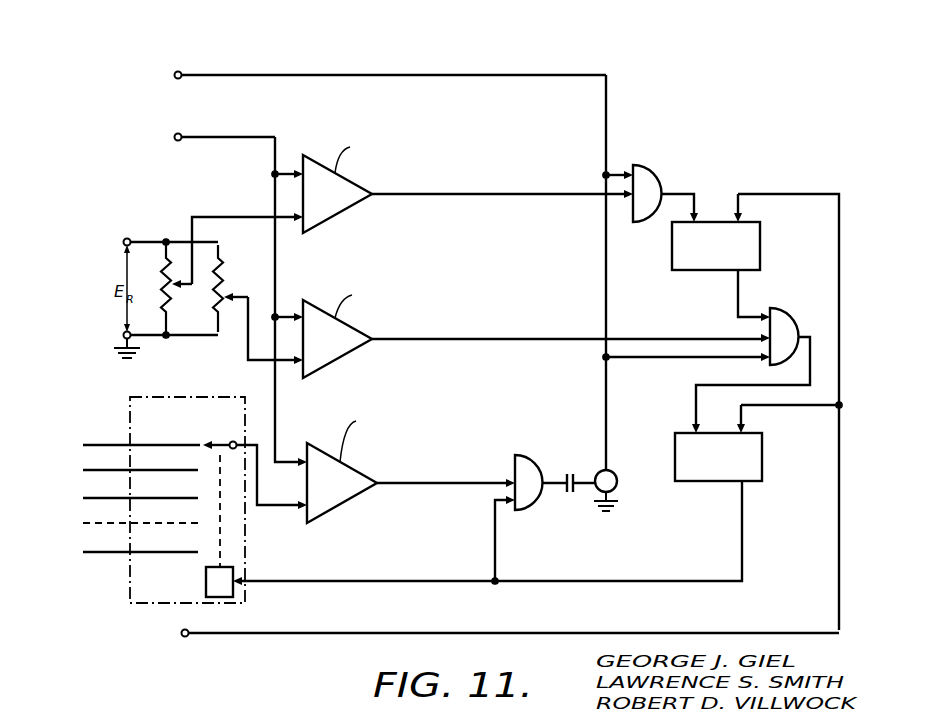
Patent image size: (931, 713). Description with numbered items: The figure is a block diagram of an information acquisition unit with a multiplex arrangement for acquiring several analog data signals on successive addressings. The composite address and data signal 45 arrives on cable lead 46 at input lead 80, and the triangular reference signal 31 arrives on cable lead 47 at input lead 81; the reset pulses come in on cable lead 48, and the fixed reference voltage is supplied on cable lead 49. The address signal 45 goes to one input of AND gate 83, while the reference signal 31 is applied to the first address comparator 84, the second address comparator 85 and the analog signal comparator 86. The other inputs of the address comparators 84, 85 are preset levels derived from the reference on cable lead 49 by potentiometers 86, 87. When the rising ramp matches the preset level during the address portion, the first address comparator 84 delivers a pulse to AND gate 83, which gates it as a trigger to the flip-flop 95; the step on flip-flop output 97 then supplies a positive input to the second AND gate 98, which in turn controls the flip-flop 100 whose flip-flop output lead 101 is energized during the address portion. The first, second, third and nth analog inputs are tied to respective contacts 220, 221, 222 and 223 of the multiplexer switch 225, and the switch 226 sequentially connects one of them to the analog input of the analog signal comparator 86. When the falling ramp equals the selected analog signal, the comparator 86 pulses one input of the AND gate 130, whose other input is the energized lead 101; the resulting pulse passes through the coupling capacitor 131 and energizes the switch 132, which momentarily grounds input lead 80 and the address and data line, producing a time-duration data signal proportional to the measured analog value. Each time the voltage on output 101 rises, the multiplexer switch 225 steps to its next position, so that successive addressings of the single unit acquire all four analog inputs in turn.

The triangular reference signal 31 is at (253, 290).
The composite address and data signal 45 is at (499, 262).
The cable lead 46 is at (101, 77).
The cable lead 47 is at (101, 137).
The cable lead 48 is at (458, 637).
The cable lead 49 is at (119, 239).
The input lead 80 is at (205, 75).
The input lead 81 is at (198, 139).
The AND gate 83 is at (650, 168).
The first address comparator 84 is at (344, 212).
The second address comparator 85 is at (348, 352).
The analog signal comparator 86 is at (170, 318).
The potentiometer 87 is at (218, 316).
The flip-flop 95 is at (760, 243).
The flip-flop output 97 is at (738, 292).
The second AND gate 98 is at (790, 318).
The flip-flop 100 is at (762, 453).
The flip-flop output lead 101 is at (742, 545).
The AND gate 130 is at (538, 458).
The coupling capacitor 131 is at (569, 494).
The switch 132 is at (616, 474).
The switch contact 220 is at (190, 440).
The switch contact 221 is at (188, 467).
The switch contact 222 is at (188, 495).
The switch contact 223 is at (188, 549).
The multiplexer switch 225 is at (254, 552).
The switch 226 is at (232, 441).